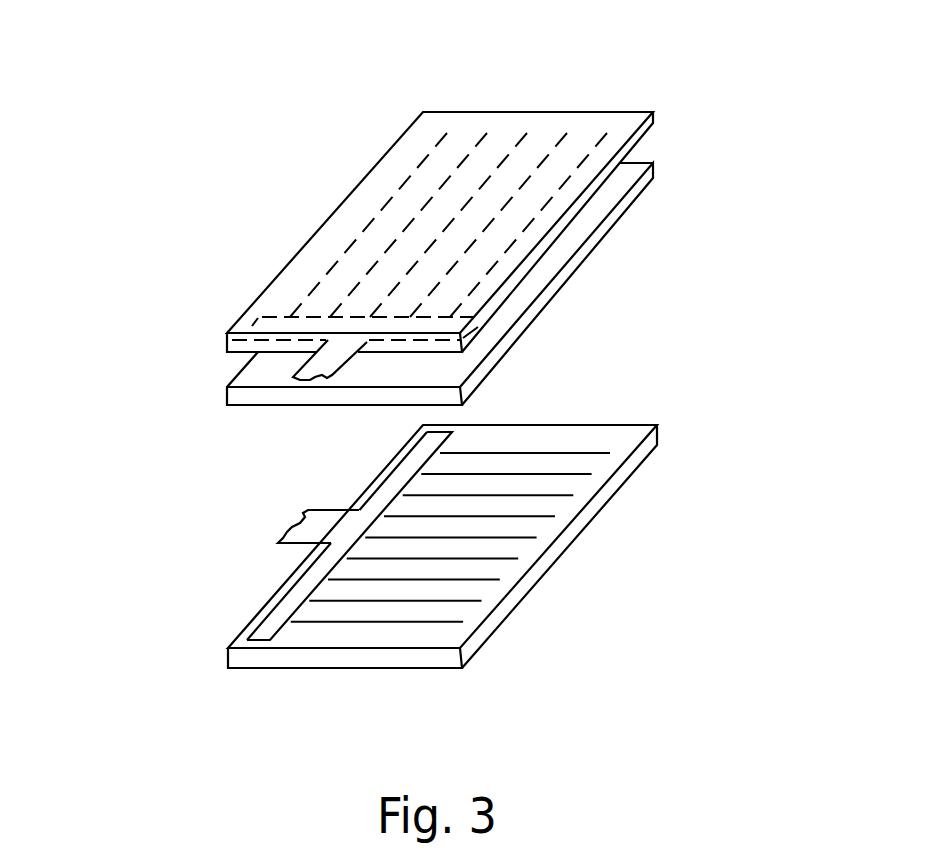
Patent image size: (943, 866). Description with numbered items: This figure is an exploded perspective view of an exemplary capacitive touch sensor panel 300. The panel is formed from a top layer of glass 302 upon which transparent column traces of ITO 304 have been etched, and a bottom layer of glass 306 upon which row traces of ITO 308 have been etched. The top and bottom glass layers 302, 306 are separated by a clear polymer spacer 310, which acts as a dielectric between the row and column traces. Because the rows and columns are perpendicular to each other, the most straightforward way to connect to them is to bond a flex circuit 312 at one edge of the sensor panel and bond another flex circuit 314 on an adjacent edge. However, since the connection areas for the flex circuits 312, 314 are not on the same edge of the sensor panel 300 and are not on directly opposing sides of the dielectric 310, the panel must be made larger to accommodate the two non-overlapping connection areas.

The capacitive touch sensor panel 300 is at (150, 199).
The top layer of glass 302 is at (632, 112).
The column traces of ITO 304 is at (433, 153).
The bottom layer of glass 306 is at (637, 432).
The row traces of ITO 308 is at (503, 453).
The clear polymer spacer 310 is at (632, 202).
The flex circuit 312 is at (303, 380).
The flex circuit 314 is at (280, 528).